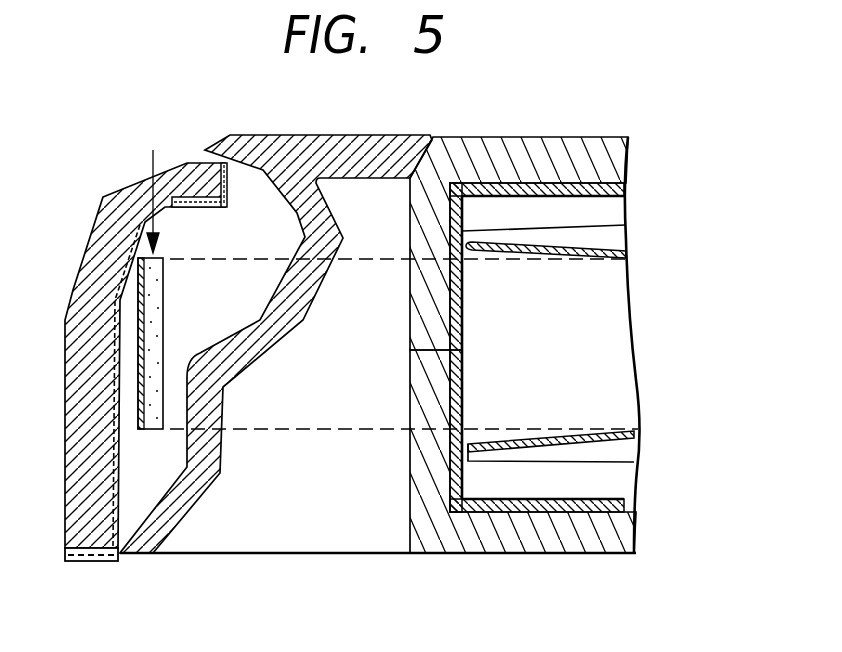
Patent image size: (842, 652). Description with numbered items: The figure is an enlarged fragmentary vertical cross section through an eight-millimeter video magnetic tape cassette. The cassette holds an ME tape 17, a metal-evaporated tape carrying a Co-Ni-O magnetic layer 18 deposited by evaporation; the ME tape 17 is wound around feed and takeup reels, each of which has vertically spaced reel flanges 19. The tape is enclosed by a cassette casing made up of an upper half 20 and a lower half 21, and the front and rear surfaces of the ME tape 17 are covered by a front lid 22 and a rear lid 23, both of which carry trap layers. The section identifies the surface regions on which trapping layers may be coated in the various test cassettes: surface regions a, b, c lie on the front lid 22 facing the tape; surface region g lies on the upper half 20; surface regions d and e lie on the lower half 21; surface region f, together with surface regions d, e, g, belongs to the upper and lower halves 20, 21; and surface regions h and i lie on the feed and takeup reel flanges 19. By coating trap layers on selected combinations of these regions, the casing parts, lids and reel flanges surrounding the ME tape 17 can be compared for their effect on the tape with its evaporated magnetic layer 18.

The ME tape 17 is at (152, 187).
The Co-Ni-O magnetic layer 18 is at (93, 463).
The reel flanges 19 is at (580, 338).
The upper half 20 is at (528, 148).
The lower half 21 is at (517, 538).
The front lid 22 is at (107, 193).
The rear lid 23 is at (291, 150).
The surface region of the front lid a is at (83, 562).
The surface region of the front lid b is at (119, 476).
The surface region of the front lid c is at (190, 209).
The surface region of the lower half d is at (538, 499).
The surface region of the lower half e is at (463, 397).
The surface region of the upper and lower halves f is at (463, 298).
The surface region of the upper half g is at (533, 197).
The surface region of the reel flanges h is at (572, 258).
The surface region of the reel flanges i is at (557, 432).